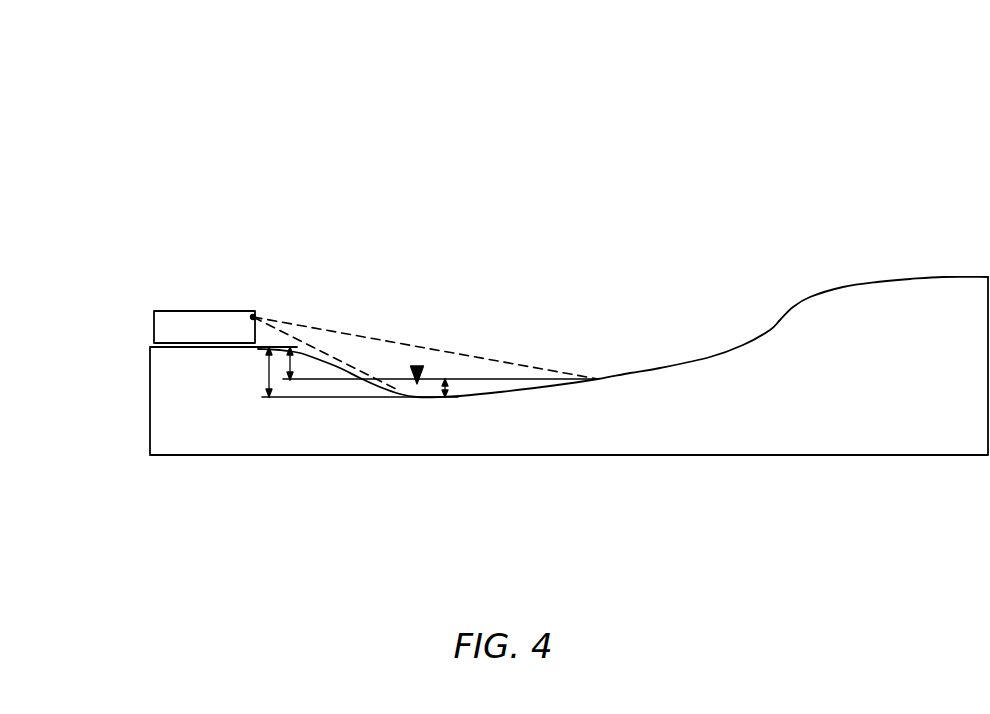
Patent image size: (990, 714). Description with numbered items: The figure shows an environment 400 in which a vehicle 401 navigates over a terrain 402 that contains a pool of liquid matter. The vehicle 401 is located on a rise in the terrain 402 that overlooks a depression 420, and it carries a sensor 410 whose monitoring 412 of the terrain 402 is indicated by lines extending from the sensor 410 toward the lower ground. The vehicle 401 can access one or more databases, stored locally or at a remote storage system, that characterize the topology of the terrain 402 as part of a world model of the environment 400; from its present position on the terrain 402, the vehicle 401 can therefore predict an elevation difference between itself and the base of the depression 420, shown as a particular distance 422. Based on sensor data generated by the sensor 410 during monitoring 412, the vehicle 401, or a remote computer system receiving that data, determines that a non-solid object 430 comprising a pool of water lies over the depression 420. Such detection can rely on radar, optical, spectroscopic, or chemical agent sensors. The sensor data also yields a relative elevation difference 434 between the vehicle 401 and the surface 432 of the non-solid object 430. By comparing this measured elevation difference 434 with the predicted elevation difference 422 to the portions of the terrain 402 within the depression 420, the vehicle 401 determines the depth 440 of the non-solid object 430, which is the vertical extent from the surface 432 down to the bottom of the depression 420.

The environment 400 is at (803, 126).
The vehicle 401 is at (218, 337).
The terrain 402 is at (937, 450).
The sensor 410 is at (253, 316).
The monitoring 412 is at (362, 333).
The depression 420 is at (460, 397).
The distance 422 is at (266, 349).
The non-solid object 430 is at (417, 366).
The surface 432 is at (515, 379).
The relative elevation difference 434 is at (288, 367).
The depth 440 is at (444, 388).